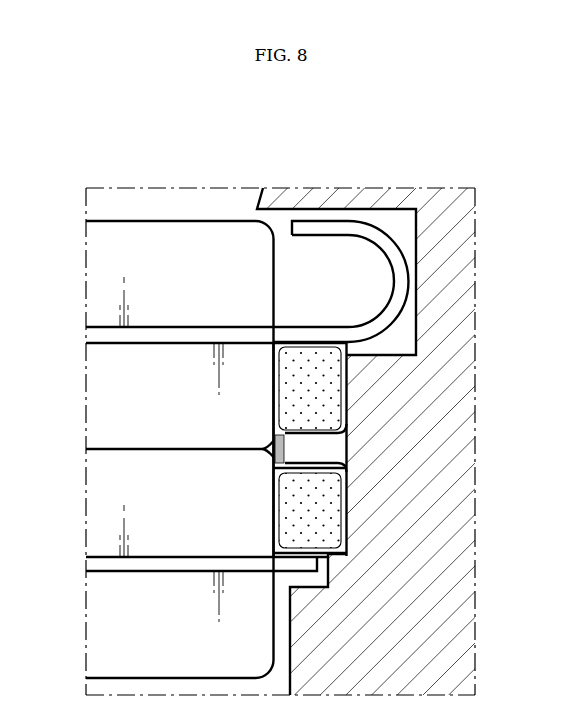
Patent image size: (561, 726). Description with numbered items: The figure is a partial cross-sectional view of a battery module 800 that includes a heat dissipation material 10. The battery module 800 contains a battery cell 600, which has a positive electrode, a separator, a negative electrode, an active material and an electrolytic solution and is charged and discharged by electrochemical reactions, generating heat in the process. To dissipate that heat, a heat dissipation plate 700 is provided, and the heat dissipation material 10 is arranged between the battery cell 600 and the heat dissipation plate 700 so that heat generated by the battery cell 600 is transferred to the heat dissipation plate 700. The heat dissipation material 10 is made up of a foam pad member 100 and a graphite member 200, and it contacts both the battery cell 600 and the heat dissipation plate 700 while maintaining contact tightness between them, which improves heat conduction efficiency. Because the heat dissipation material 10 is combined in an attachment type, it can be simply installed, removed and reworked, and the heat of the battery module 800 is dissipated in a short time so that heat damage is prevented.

The battery module 800 is at (280, 397).
The heat dissipation plate 700 is at (452, 253).
The battery cell 600 is at (108, 254).
The foam pad member 100 is at (320, 398).
The graphite member 200 is at (348, 458).
The heat dissipation material 10 is at (407, 474).